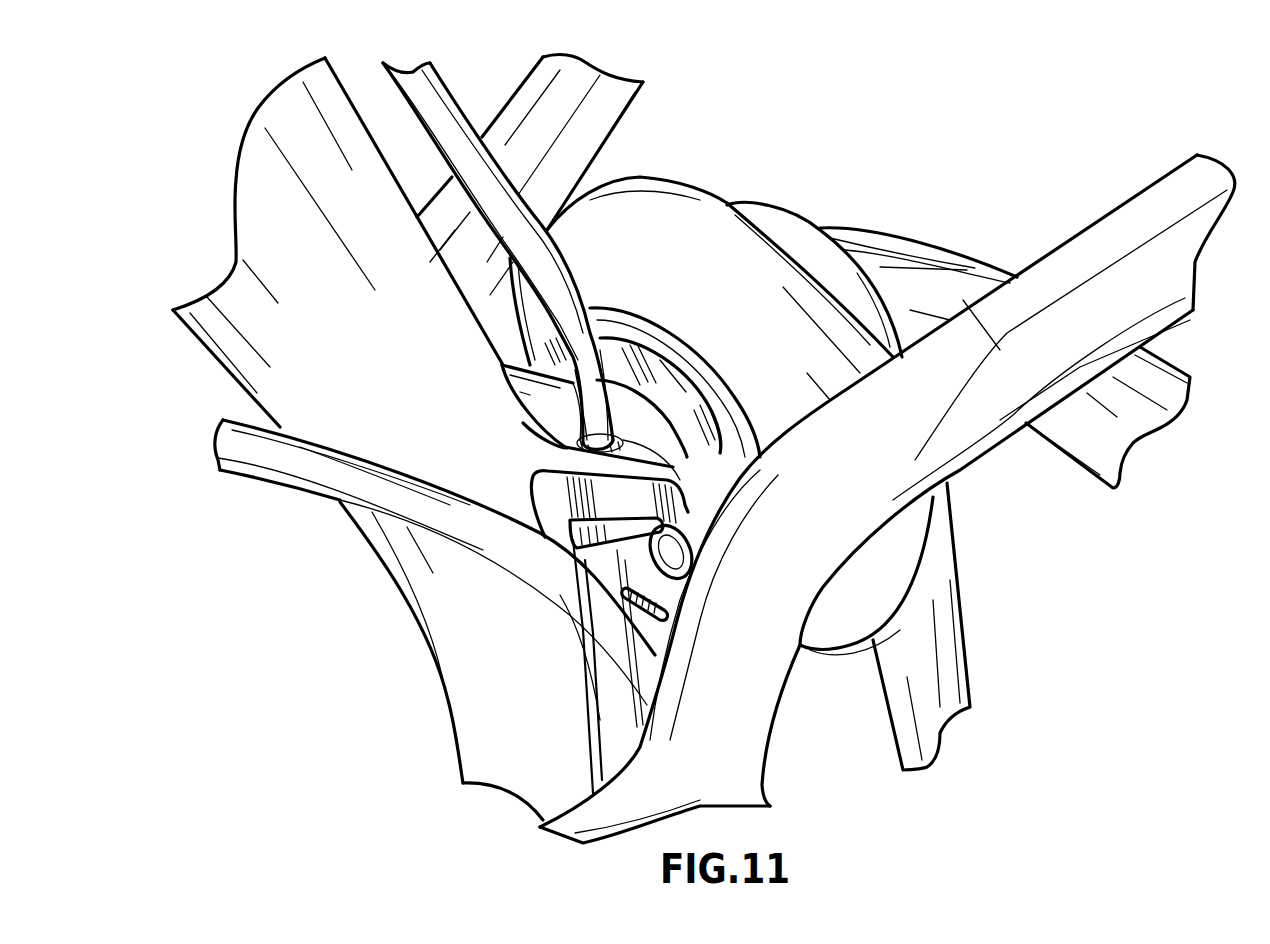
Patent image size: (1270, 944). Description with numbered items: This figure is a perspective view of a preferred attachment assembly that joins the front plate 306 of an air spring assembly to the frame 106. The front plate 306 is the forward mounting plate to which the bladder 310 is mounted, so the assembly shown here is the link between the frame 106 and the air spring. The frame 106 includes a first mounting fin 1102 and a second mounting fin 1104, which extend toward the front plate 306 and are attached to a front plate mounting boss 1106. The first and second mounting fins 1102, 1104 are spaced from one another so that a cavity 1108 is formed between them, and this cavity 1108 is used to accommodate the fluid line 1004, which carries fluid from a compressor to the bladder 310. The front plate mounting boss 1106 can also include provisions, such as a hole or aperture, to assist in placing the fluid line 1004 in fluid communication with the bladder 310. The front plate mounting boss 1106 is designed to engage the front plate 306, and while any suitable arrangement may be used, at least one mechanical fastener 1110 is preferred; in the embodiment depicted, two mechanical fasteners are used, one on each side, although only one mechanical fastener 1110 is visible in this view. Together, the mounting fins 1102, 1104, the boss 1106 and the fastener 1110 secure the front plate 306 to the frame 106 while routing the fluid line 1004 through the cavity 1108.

The frame 106 is at (285, 322).
The front plate 306 is at (622, 360).
The bladder 310 is at (738, 302).
The fluid line 1004 is at (503, 217).
The first mounting fin 1102 is at (625, 492).
The second mounting fin 1104 is at (500, 383).
The front plate mounting boss 1106 is at (670, 433).
The cavity 1108 is at (550, 427).
The mechanical fastener 1110 is at (630, 643).